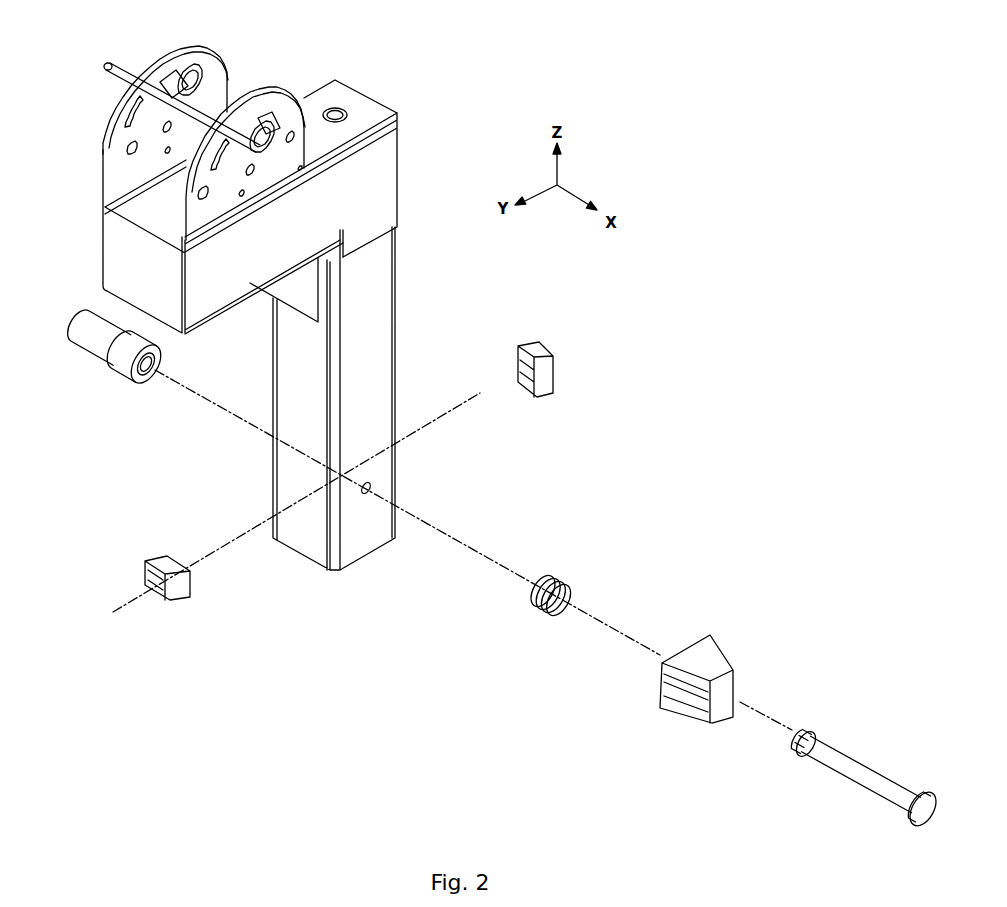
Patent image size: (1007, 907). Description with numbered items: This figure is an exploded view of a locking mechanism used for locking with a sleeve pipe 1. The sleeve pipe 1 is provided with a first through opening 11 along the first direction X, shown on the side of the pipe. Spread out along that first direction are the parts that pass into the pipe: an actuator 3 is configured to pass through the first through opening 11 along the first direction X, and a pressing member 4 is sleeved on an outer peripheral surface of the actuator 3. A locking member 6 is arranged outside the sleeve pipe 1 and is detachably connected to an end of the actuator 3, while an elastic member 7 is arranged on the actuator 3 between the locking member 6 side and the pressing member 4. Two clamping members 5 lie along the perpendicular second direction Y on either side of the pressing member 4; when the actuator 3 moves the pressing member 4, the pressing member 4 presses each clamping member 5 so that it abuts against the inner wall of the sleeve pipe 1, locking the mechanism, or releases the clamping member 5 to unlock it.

The sleeve pipe 1 is at (378, 374).
The actuator 3 is at (853, 767).
The pressing member 4 is at (708, 665).
The clamping member 5 is at (548, 367).
The locking member 6 is at (103, 343).
The elastic member 7 is at (560, 580).
The first through opening 11 is at (372, 490).